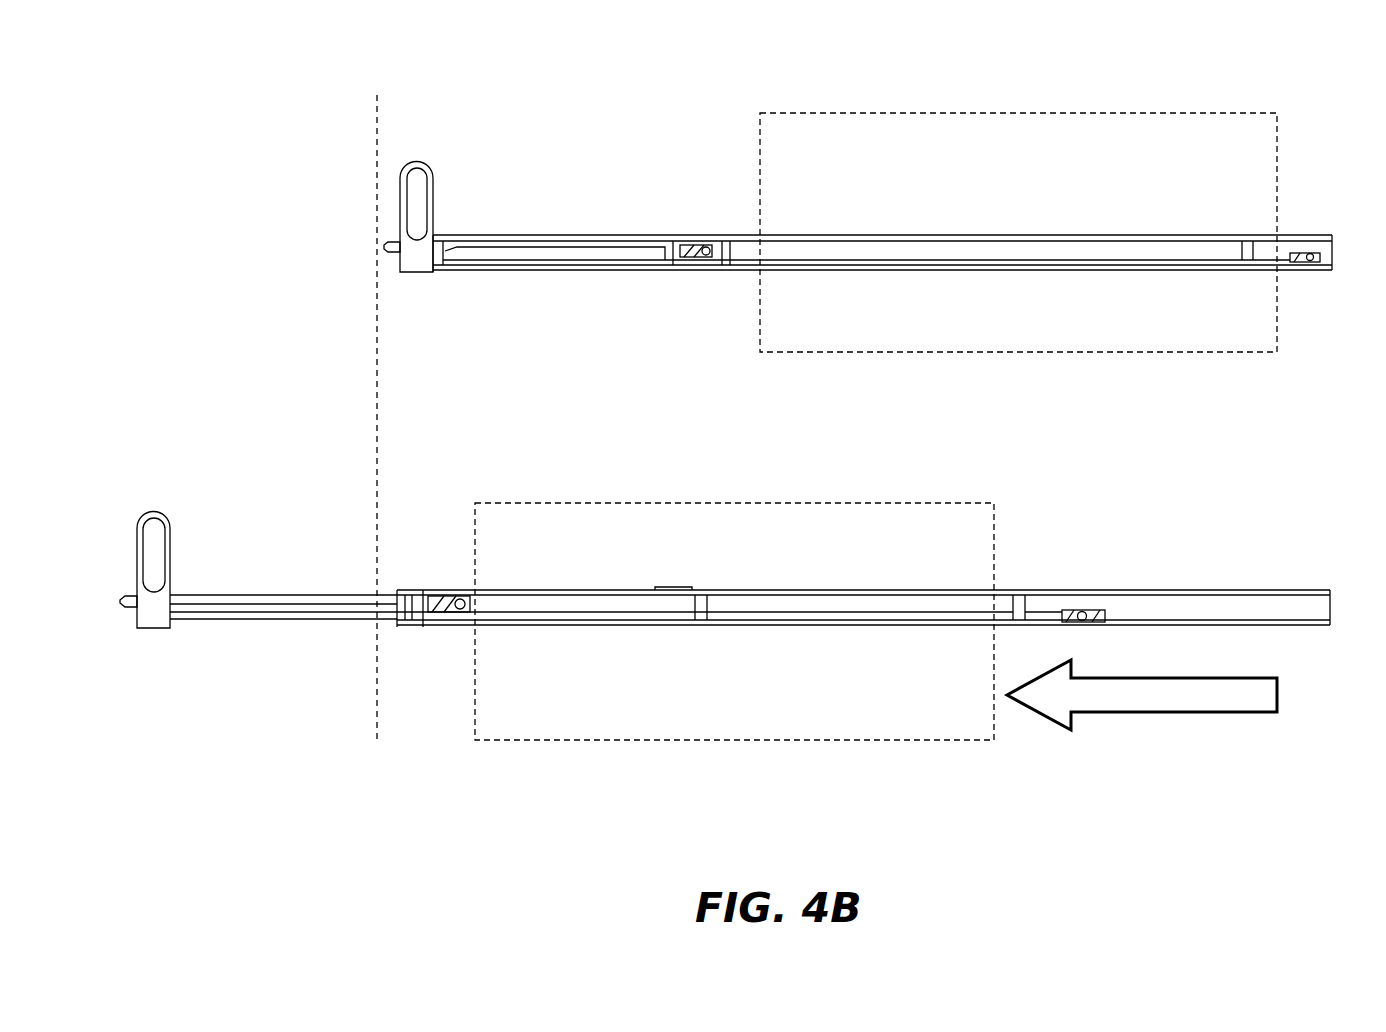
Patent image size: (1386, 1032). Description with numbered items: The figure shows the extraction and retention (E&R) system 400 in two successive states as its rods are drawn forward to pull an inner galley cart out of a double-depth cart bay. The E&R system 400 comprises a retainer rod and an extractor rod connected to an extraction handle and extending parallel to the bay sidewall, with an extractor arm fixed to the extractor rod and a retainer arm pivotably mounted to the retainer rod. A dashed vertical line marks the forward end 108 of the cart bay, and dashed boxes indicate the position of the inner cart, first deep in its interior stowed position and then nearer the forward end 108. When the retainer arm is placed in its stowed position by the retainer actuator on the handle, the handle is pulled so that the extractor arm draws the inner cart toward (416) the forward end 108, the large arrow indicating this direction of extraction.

The extraction and retention (E&R) system 400 is at (138, 102).
The forward end 108 is at (375, 163).
The direction toward the forward end 416 is at (1120, 695).